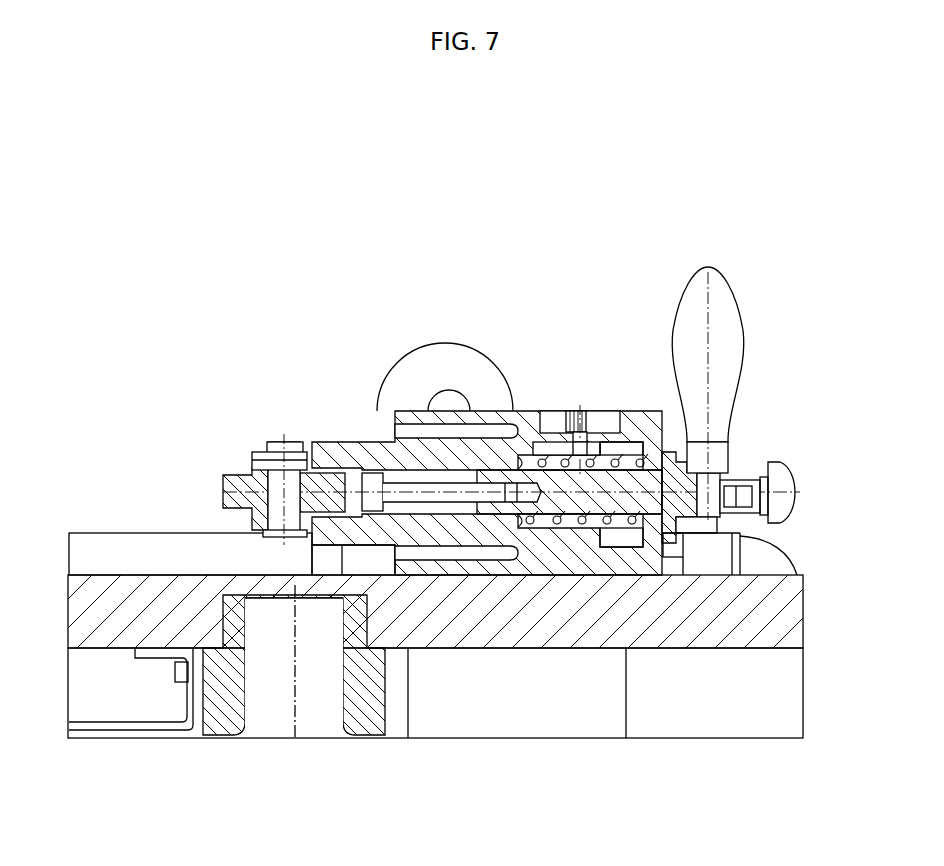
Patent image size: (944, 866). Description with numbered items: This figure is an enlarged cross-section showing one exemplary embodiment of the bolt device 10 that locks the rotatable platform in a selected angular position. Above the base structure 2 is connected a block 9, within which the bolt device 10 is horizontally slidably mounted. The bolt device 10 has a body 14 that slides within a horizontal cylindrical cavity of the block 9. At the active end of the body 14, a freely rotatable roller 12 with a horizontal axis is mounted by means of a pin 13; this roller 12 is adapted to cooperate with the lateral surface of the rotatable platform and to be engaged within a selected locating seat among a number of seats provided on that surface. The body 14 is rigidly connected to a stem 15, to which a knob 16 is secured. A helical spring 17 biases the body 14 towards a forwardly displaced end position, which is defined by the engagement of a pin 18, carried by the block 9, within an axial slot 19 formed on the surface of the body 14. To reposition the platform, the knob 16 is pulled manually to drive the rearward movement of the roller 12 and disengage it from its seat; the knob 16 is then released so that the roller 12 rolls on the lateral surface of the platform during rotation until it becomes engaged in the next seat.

The base structure 2 is at (818, 612).
The block 9 is at (485, 406).
The bolt device 10 is at (239, 412).
The roller 12 is at (223, 494).
The pin 13 is at (290, 472).
The body 14 is at (338, 441).
The stem 15 is at (667, 494).
The knob 16 is at (725, 312).
The helical spring 17 is at (623, 440).
The pin 18 is at (581, 431).
The axial slot 19 is at (560, 443).